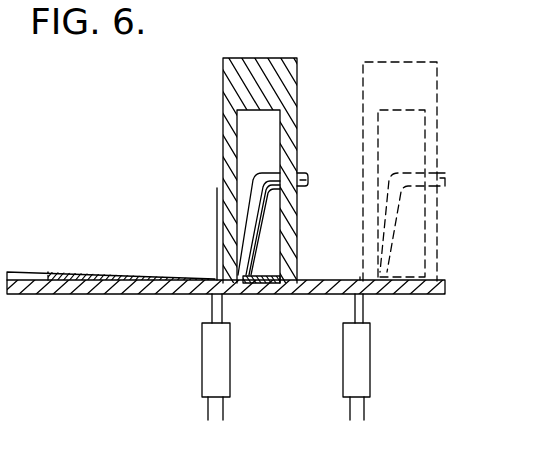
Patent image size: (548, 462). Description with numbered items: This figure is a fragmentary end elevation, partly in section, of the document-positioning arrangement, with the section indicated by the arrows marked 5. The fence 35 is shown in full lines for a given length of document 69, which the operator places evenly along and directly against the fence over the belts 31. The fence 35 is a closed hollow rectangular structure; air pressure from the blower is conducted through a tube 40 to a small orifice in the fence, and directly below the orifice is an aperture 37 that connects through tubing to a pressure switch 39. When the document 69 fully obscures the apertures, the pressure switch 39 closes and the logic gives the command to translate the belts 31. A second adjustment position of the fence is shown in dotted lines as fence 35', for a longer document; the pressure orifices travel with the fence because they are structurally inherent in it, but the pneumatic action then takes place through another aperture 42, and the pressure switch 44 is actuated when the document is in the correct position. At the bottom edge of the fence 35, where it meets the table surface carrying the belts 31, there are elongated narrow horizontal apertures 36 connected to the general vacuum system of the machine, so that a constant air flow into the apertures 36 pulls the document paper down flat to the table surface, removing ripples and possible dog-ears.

The belts 31 is at (69, 277).
The document 69 is at (160, 276).
The fence 35 is at (274, 231).
The fence in dotted position 35' is at (378, 171).
The tube 40 is at (254, 210).
The elongated narrow horizontal apertures 36 is at (235, 284).
The aperture 37 is at (216, 272).
The pressure switch 39 is at (205, 369).
The aperture 42 is at (359, 284).
The pressure switch 44 is at (347, 373).
The section line 5- 5 is at (217, 188).